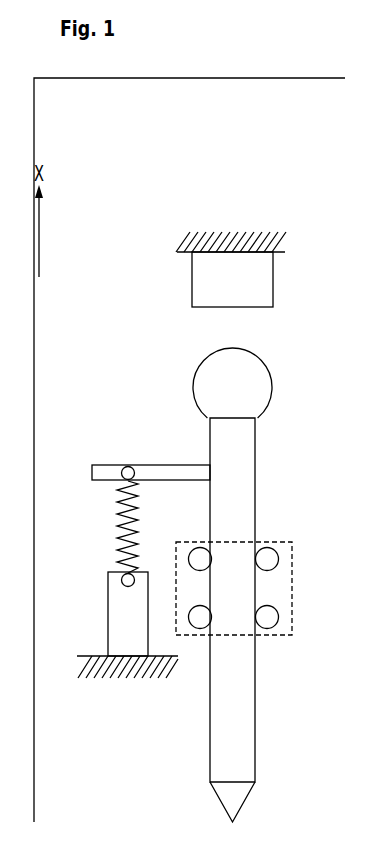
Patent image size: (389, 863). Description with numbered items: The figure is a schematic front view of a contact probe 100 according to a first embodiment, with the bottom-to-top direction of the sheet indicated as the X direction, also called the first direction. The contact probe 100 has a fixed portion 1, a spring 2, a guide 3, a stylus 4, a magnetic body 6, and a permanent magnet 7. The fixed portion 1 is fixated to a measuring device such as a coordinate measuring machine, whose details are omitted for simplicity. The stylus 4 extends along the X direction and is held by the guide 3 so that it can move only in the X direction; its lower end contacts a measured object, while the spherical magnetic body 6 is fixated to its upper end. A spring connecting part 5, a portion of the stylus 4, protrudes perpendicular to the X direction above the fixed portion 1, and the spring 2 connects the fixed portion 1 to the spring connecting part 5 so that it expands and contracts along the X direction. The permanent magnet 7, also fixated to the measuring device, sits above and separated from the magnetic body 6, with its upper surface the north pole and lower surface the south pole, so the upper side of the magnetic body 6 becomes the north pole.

The contact probe 100 is at (234, 131).
The fixed portion 1 is at (108, 620).
The spring 2 is at (117, 520).
The guide 3 is at (285, 542).
The stylus 4 is at (255, 472).
The spring connecting part 5 is at (153, 465).
The magnetic body 6 is at (270, 378).
The permanent magnet 7 is at (273, 284).